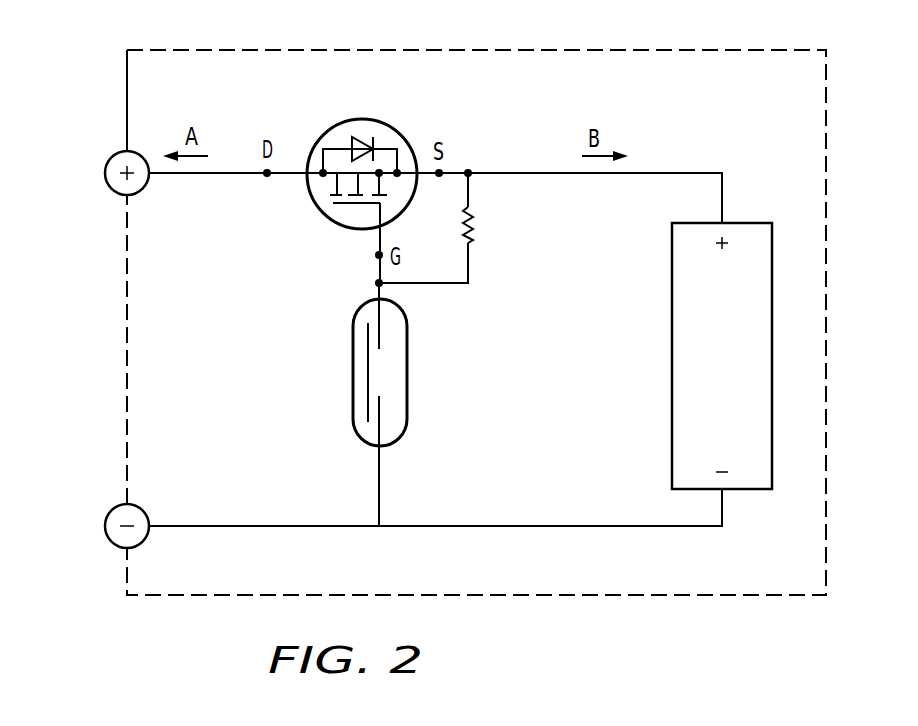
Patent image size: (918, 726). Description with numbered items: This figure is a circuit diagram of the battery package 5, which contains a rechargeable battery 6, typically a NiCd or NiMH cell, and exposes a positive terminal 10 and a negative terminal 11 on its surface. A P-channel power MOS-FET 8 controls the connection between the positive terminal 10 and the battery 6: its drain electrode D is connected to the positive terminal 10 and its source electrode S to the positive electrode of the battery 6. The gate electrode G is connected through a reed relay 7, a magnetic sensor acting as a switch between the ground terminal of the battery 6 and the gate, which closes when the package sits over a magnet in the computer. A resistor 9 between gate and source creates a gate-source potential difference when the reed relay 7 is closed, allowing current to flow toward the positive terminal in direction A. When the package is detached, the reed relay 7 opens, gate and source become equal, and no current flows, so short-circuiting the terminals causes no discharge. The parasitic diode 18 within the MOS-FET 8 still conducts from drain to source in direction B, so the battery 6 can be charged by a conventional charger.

The battery package 5 is at (742, 48).
The battery 6 is at (682, 358).
The reed relay 7 is at (408, 371).
The P-channel power MOS-FET 8 is at (400, 130).
The resistor 9 is at (476, 221).
The positive terminal 10 is at (105, 172).
The negative terminal 11 is at (105, 525).
The parasitic diode 18 is at (360, 138).